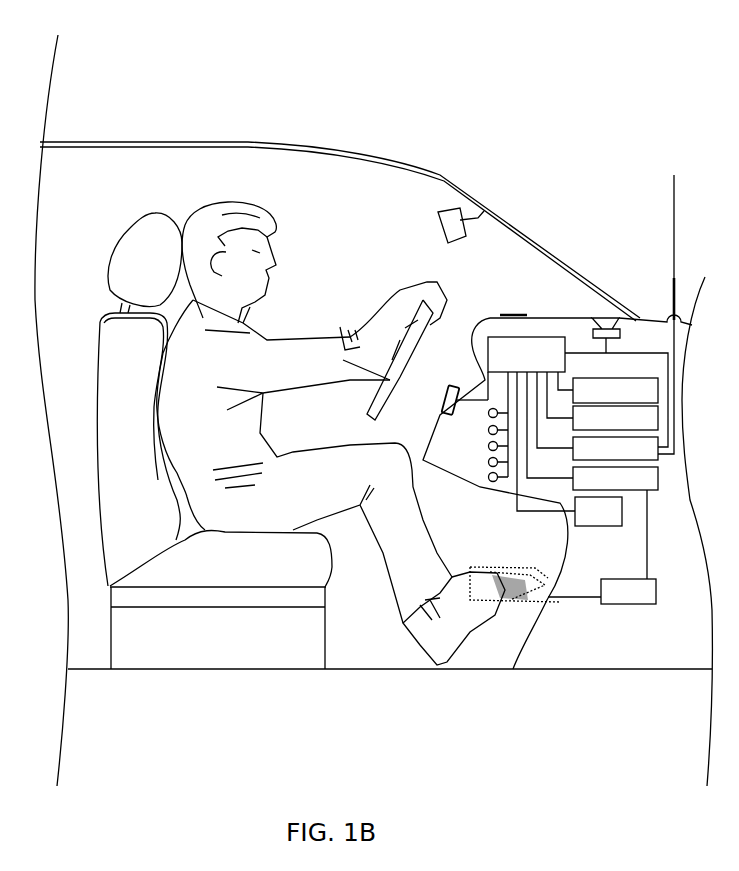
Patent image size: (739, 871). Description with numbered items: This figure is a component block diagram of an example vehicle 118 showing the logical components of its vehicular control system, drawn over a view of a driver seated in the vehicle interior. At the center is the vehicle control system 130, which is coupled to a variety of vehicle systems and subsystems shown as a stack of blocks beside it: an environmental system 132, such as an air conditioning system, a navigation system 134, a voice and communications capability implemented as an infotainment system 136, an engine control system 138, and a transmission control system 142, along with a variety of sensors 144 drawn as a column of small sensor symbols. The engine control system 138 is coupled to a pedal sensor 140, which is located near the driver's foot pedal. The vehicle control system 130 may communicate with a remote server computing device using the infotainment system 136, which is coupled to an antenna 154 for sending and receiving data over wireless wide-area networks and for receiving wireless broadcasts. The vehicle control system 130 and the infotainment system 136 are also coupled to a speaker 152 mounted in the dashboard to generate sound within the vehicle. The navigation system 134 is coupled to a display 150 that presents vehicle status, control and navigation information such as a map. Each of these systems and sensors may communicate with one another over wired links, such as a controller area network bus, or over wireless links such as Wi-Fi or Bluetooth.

The vehicle 118 is at (615, 69).
The vehicle control system 130 is at (578, 424).
The environmental system 132 is at (615, 390).
The navigation system 134 is at (615, 418).
The infotainment system 136 is at (623, 395).
The engine control system 138 is at (615, 478).
The pedal sensor 140 is at (602, 547).
The transmission control system 142 is at (598, 511).
The sensors 144 is at (485, 405).
The display 150 is at (443, 406).
The speaker 152 is at (606, 317).
The antenna 154 is at (674, 278).